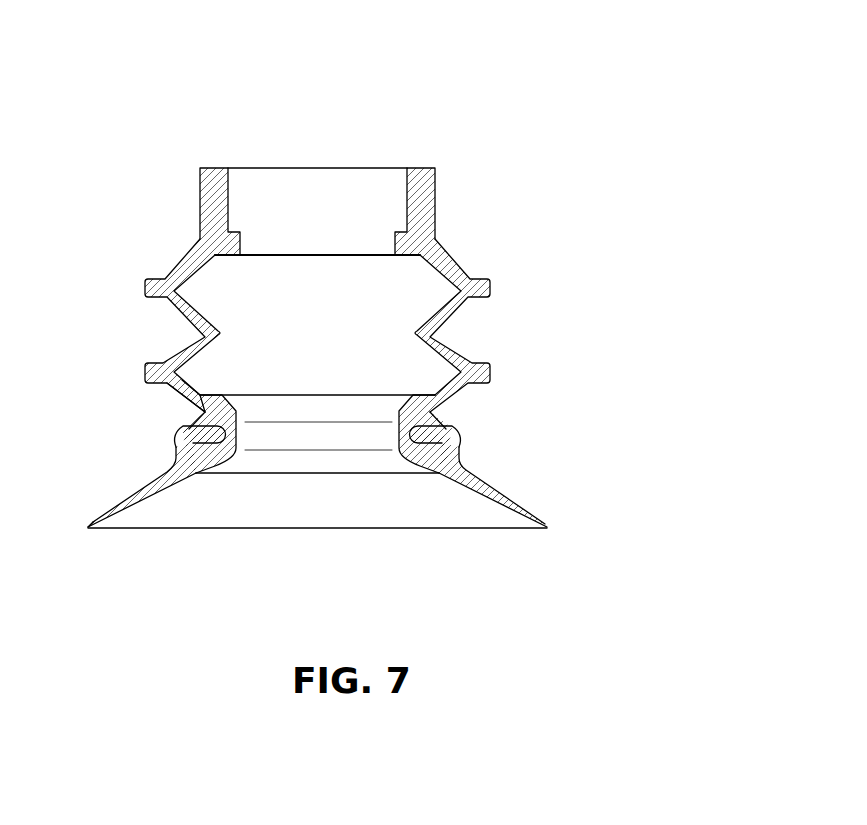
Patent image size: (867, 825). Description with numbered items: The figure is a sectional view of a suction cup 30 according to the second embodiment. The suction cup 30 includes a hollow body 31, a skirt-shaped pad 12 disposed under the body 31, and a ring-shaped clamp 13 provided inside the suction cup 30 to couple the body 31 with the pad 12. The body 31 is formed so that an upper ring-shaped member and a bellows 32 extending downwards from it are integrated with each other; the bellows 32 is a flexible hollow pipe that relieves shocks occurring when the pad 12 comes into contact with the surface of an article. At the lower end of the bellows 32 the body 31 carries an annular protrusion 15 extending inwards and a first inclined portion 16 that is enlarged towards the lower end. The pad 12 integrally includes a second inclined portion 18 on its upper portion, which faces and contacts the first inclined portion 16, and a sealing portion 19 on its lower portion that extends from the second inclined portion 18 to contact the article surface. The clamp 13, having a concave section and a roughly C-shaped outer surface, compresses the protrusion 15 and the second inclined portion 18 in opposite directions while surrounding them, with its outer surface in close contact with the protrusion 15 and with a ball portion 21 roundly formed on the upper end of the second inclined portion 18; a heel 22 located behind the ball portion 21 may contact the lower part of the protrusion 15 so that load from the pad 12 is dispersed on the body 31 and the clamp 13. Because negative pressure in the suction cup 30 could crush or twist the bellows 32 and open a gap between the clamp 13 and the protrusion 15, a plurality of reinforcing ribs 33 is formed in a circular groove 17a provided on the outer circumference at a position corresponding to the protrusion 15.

The suction cup 30 is at (394, 96).
The hollow body 31 is at (462, 222).
The bellows 32 is at (453, 345).
The reinforcing ribs 33 is at (453, 420).
The circular groove 17a is at (470, 405).
The pad 12 is at (348, 421).
The clamp 13 is at (335, 491).
The annular protrusion 15 is at (217, 410).
The first inclined portion 16 is at (447, 450).
The second inclined portion 18 is at (177, 442).
The sealing portion 19 is at (135, 487).
The ball portion 21 is at (240, 450).
The heel 22 is at (187, 422).